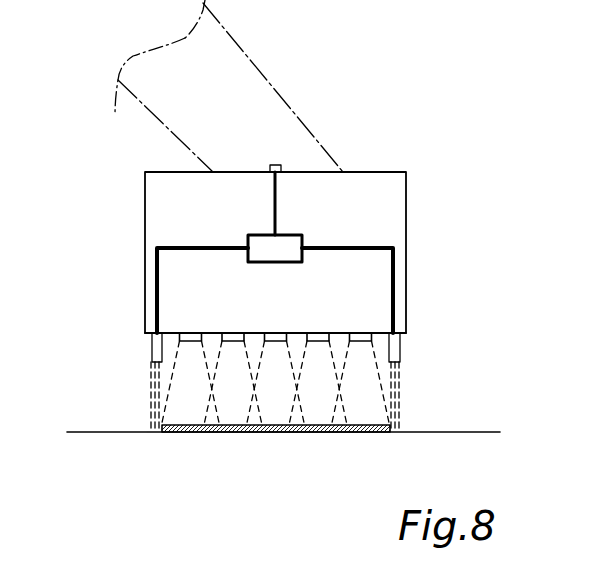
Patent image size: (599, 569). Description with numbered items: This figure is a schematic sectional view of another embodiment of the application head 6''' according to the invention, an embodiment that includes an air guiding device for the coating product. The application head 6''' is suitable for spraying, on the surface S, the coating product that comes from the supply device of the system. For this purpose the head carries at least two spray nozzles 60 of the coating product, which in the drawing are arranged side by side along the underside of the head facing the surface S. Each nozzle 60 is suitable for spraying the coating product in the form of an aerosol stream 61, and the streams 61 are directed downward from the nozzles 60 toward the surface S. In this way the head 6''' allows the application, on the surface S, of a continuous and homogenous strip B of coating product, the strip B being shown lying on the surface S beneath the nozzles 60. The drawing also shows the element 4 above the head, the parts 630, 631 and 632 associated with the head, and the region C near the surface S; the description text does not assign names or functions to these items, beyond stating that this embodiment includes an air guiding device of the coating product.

The robot arm 4 is at (229, 86).
The application head 6''' is at (306, 249).
The spray nozzle 60 is at (192, 332).
The aerosol stream 61 is at (190, 389).
The lateral side plates 630 is at (150, 343).
The lateral air curtains 631 is at (139, 390).
The distribution duct 632 is at (337, 242).
The strip of coating product B is at (303, 435).
The confinement zone C is at (152, 437).
The surface S is at (487, 431).